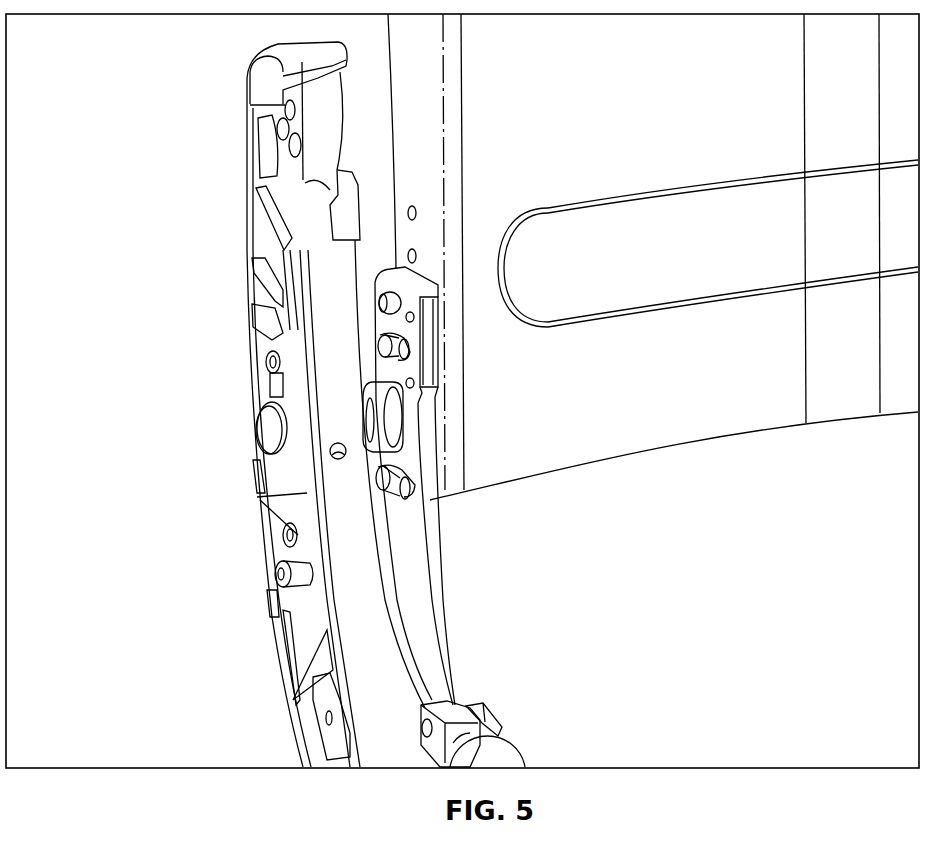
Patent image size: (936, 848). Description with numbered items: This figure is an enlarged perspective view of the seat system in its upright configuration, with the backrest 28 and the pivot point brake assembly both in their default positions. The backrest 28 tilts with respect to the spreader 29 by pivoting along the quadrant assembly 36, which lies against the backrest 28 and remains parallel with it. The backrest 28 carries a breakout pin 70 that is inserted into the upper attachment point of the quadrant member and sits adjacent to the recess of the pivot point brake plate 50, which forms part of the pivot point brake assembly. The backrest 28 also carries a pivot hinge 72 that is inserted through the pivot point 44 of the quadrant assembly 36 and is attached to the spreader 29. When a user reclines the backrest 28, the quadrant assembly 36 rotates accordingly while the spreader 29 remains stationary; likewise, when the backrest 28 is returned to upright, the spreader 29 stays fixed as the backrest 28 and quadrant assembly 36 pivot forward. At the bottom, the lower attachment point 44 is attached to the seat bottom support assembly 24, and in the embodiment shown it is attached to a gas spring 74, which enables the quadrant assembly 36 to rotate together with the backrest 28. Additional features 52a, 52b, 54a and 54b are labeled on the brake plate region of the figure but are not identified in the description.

The seat bottom support assembly 24 is at (490, 745).
The backrest 28 is at (650, 362).
The spreader 29 is at (309, 331).
The quadrant assembly 36 is at (423, 663).
The lower attachment point 44 is at (423, 725).
The pivot point brake plate 50 is at (410, 465).
The upper pin 52a is at (397, 350).
The lower pin 52b is at (383, 493).
The upper slot 54a is at (380, 338).
The lower slot 54b is at (420, 483).
The breakout pin 70 is at (382, 295).
The pivot hinge 72 is at (383, 427).
The gas spring 74 is at (497, 758).